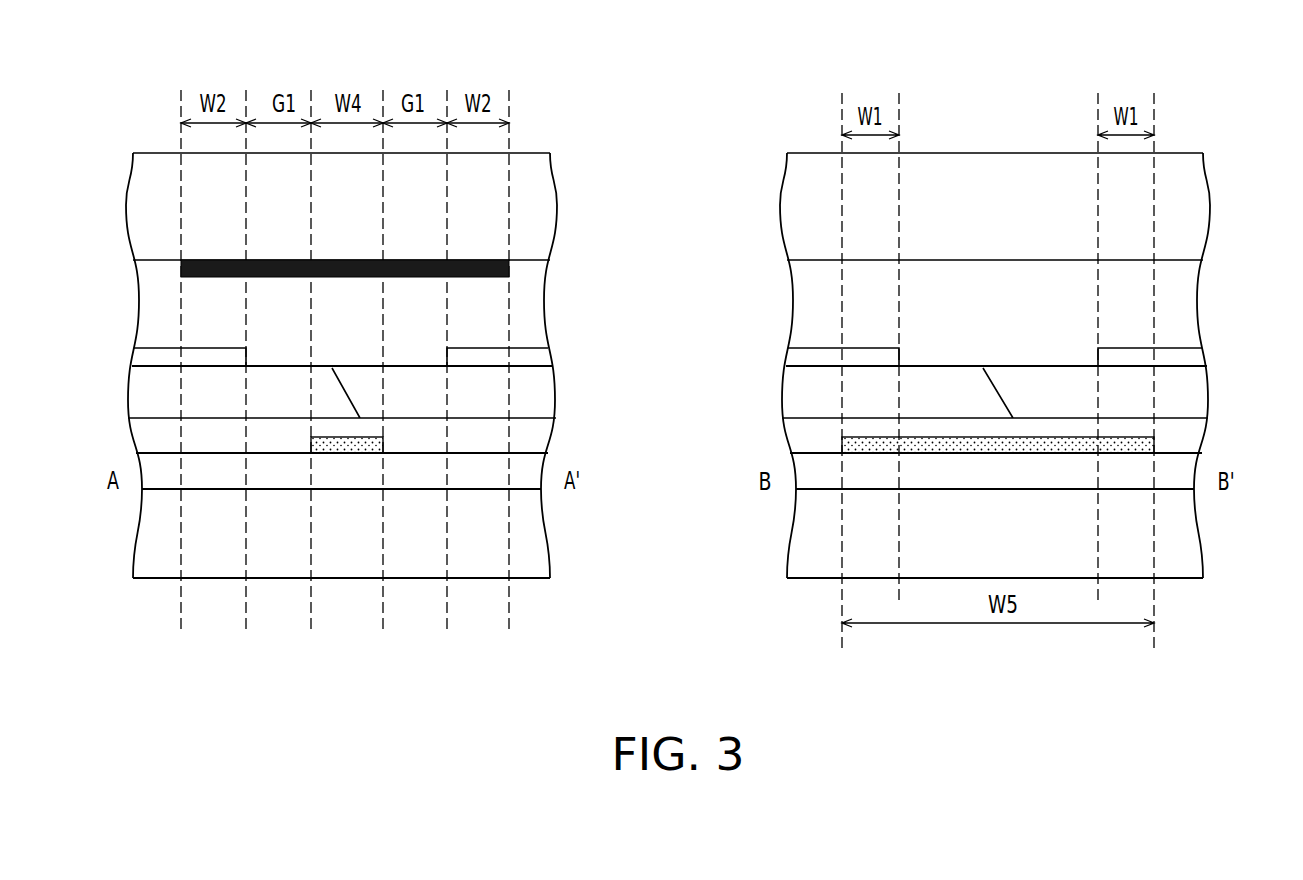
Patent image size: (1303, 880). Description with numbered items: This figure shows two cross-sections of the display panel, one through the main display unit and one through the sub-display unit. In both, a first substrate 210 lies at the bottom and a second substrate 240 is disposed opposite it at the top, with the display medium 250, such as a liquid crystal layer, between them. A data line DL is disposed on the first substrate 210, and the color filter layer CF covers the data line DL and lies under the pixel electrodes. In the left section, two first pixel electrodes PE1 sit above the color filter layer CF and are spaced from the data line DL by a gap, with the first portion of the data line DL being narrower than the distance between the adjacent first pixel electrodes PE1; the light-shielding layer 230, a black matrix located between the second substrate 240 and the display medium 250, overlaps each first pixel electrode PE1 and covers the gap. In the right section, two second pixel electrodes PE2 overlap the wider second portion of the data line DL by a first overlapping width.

The second substrate 240 is at (548, 201).
The display medium 250 is at (530, 313).
The light-shielding layer 230 is at (420, 258).
The first substrate 210 is at (532, 525).
The first pixel electrode PE1 is at (141, 357).
The second pixel electrode PE2 is at (797, 357).
The color filter layer CF is at (141, 398).
The data line DL is at (377, 447).